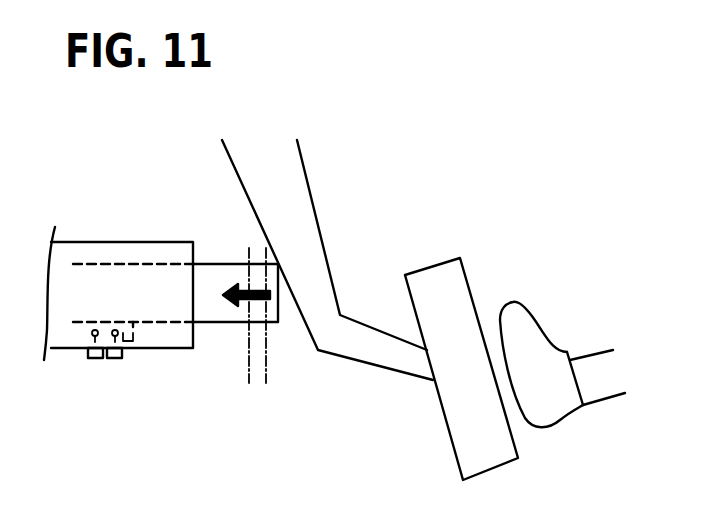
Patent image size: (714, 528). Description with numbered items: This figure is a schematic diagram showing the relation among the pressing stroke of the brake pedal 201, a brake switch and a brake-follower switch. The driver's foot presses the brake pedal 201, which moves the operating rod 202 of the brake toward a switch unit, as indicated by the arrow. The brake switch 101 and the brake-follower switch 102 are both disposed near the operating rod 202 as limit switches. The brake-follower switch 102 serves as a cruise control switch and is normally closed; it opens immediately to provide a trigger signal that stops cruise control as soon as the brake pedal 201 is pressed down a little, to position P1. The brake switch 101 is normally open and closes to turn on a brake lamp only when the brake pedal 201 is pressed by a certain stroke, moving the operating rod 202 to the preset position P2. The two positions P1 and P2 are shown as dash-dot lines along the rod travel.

The brake switch 101 is at (95, 358).
The brake-follower switch 102 is at (115, 358).
The operating rod 202 is at (210, 277).
The brake pedal 201 is at (510, 458).
The position P1 is at (276, 331).
The position P2 is at (241, 331).